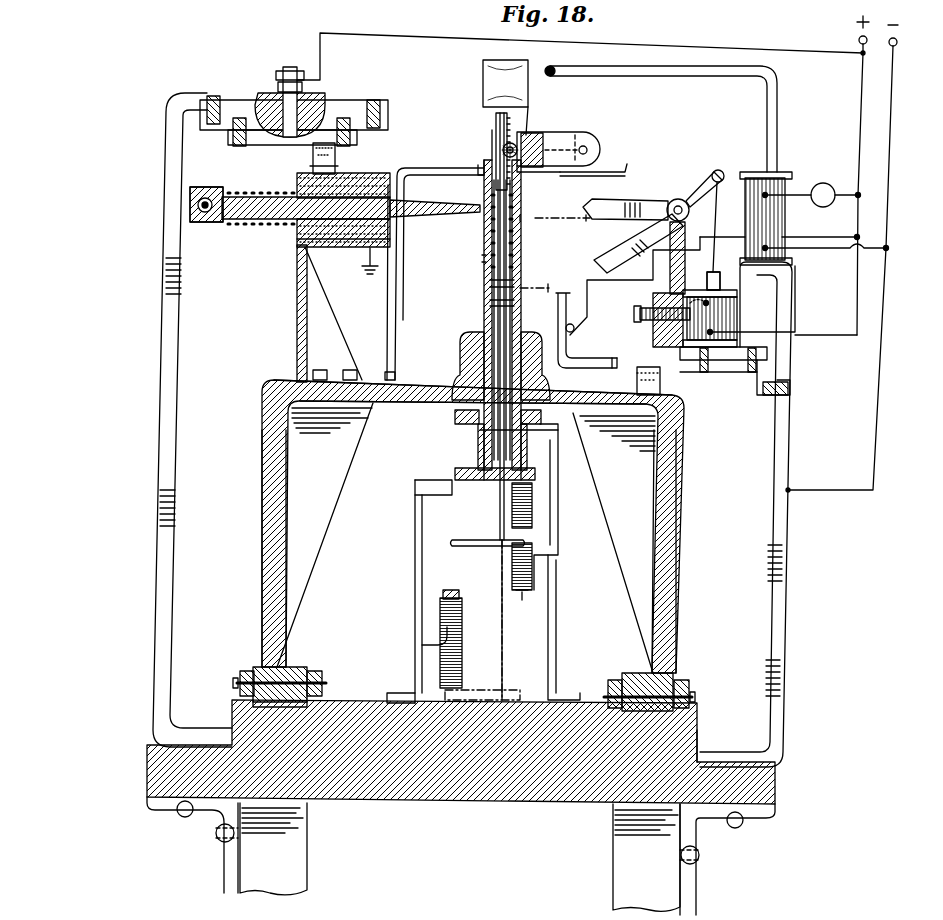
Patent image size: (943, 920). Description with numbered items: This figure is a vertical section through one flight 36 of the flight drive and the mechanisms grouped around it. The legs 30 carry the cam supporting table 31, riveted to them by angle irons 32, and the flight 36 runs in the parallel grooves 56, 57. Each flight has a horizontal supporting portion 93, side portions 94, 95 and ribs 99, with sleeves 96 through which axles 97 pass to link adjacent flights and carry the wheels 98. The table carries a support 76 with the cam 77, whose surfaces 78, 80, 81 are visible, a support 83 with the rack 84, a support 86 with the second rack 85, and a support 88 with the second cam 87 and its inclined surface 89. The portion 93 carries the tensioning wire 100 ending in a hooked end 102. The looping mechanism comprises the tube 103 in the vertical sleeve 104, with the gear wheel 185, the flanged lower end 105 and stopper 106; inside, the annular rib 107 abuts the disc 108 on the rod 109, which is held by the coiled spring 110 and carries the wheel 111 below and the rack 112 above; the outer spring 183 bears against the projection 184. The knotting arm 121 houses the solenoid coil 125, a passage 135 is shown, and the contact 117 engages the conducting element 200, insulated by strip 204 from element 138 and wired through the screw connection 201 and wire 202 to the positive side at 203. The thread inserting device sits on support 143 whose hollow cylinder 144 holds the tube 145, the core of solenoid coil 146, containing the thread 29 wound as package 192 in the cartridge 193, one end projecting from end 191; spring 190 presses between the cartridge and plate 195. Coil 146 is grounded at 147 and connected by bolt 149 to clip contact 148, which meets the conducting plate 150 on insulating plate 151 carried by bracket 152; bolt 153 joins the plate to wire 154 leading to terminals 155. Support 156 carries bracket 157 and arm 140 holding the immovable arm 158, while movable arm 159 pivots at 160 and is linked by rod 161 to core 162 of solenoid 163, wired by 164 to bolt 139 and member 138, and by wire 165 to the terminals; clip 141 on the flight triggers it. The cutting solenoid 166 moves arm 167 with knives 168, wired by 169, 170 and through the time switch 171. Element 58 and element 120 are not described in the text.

The thread 29 is at (488, 206).
The supports or legs 30 is at (305, 843).
The cam supporting table 31 is at (502, 801).
The angle irons 32 is at (162, 808).
The flights 36 is at (690, 520).
The groove 56 is at (258, 703).
The groove 57 is at (698, 737).
The mounting plate 58 is at (546, 170).
The support 76 is at (556, 618).
The cam 77 is at (525, 597).
The downwardly inclined surface 78 is at (524, 492).
The downwardly inclined surface 80 is at (524, 576).
The second horizontal surface 81 is at (513, 593).
The support 83 is at (560, 517).
The rack 84 is at (560, 426).
The second rack 85 is at (415, 486).
The support 86 is at (415, 576).
The second cam 87 is at (452, 593).
The support 88 is at (425, 644).
The downwardly inclined surface 89 is at (440, 601).
The horizontal supporting portion 93 is at (434, 390).
The side portion 94 is at (262, 586).
The side portion 95 is at (678, 580).
The eyes or sleeves 96 is at (297, 667).
The pins or axles 97 is at (237, 683).
The wheels 98 is at (242, 671).
The ribs or web 99 is at (313, 548).
The yarn tensioning wire 100 is at (441, 168).
The hooked ends 102 is at (630, 168).
The elongated tube 103 is at (482, 259).
The vertical sleeve 104 is at (466, 332).
The lower end of the tube 105 is at (455, 470).
The sleeve or stopper 106 is at (479, 477).
The annular rib 107 is at (494, 268).
The disc 108 is at (490, 283).
The rod 109 is at (500, 317).
The coiled spring 110 is at (490, 302).
The wheel 111 is at (500, 689).
The rack 112 is at (496, 117).
The conducting contact 117 is at (535, 284).
The pinion 120 is at (512, 144).
The knotting arm 121 is at (569, 132).
The solenoid coil 125 is at (546, 134).
The passage 135 is at (587, 147).
The angular conducting element 138 is at (650, 330).
The conducting bolt 139 is at (634, 313).
The arm 140 is at (770, 354).
The grounded contact clip 141 is at (660, 382).
The support 143 is at (297, 296).
The hollow cylinder 144 is at (362, 266).
The elongated tube 145 is at (251, 197).
The solenoid coil 146 is at (299, 231).
The ground connection 147 is at (366, 241).
The clip contact 148 is at (313, 157).
The conducting bolt 149 is at (312, 166).
The conducting plate 150 is at (256, 135).
The insulating plate 151 is at (232, 110).
The bracket 152 is at (172, 185).
The conducting bolt 153 is at (290, 67).
The wire 154 is at (398, 36).
The terminals 155 is at (858, 40).
The support 156 is at (786, 583).
The bracket 157 is at (774, 367).
The immovable arm 158 is at (652, 203).
The movable arm 159 is at (646, 248).
The pivot 160 is at (682, 200).
The rod 161 is at (717, 222).
The movable core 162 is at (722, 282).
The solenoid 163 is at (738, 300).
The wire 164 is at (738, 312).
The wire 165 is at (846, 337).
The solenoid 166 is at (787, 218).
The arm 167 is at (640, 72).
The knives 168 is at (505, 97).
The wire 169 is at (806, 249).
The wire 170 is at (886, 165).
The time switch 171 is at (826, 181).
The outer coil spring 183 is at (484, 233).
The projection 184 is at (484, 168).
The gear wheel 185 is at (455, 417).
The spring 190 is at (238, 220).
The end of the tube 191 is at (472, 212).
The package 192 is at (190, 207).
The cartridge 193 is at (205, 188).
The plate 195 is at (299, 188).
The angular conducting element 200 is at (557, 308).
The screw connection 201 is at (575, 329).
The wire 202 is at (633, 285).
The connection point 203 is at (860, 236).
The insulating strip 204 is at (617, 358).